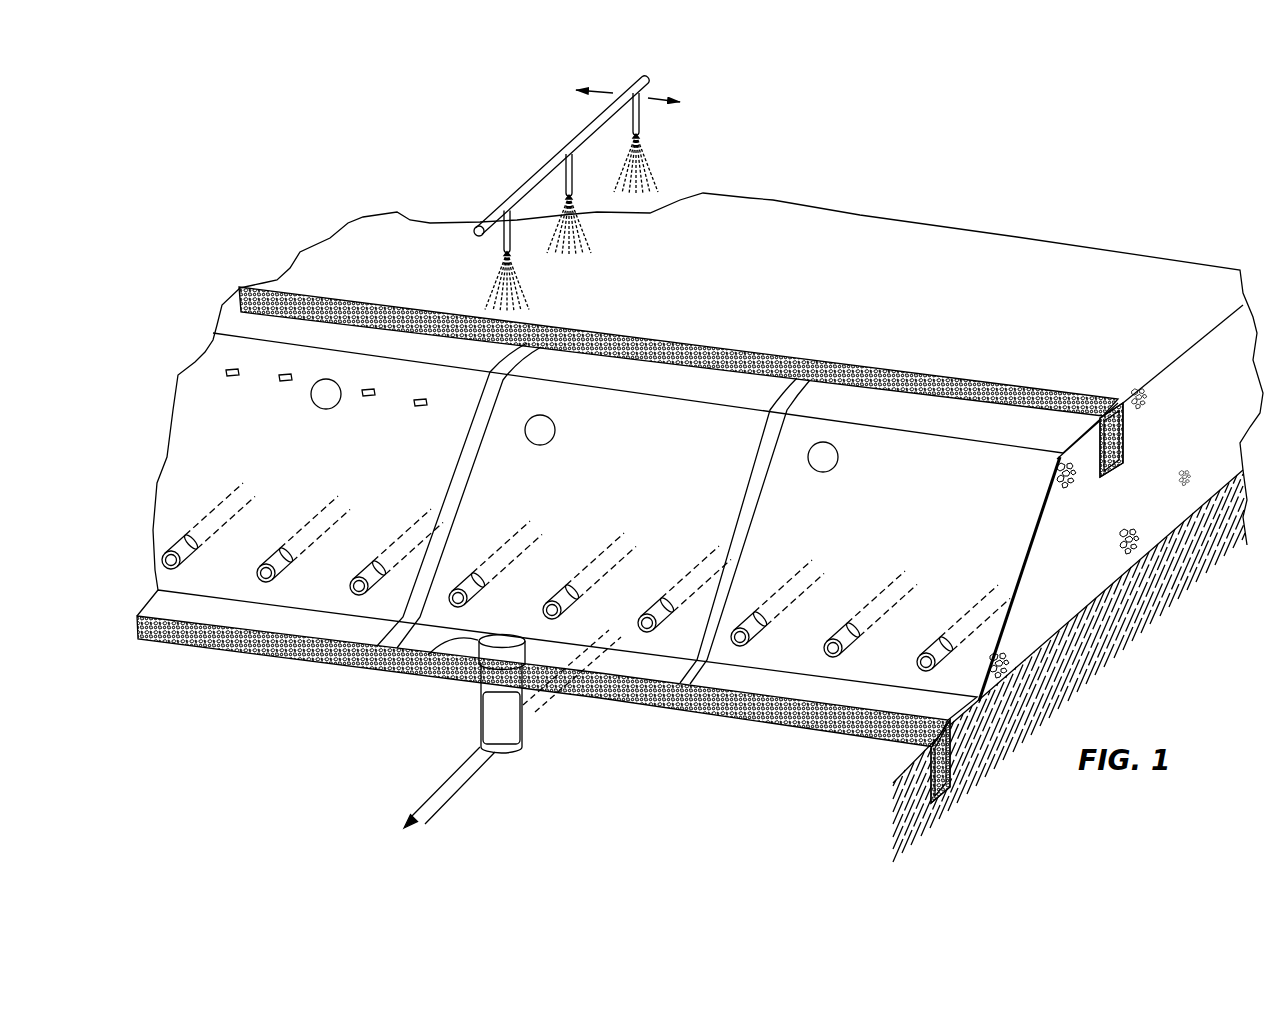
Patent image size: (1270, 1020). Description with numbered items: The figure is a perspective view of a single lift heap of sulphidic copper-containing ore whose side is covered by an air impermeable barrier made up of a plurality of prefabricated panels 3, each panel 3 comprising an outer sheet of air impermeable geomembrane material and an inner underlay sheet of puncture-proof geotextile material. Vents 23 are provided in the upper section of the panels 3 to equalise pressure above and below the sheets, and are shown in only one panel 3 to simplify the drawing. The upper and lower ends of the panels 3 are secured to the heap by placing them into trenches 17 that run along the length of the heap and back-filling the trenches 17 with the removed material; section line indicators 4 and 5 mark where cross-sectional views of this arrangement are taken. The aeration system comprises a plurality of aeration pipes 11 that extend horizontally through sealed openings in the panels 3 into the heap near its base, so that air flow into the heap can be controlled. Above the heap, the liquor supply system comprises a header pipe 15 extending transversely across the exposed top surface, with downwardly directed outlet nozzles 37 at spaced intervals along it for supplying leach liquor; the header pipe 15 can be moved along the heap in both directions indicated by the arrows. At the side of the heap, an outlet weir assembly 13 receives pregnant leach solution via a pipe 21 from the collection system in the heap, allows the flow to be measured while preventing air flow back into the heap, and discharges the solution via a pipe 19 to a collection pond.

The prefabricated panel 3 is at (178, 375).
The section line 4- 4 is at (913, 477).
The section line 5- 5 is at (360, 775).
The aeration pipe 11 is at (197, 533).
The outlet weir assembly 13 is at (430, 654).
The header pipe 15 is at (543, 167).
The trench 17 is at (1125, 437).
The pipe 19 is at (460, 777).
The pipe 21 is at (537, 693).
The vent 23 is at (233, 376).
The outlet nozzle 37 is at (641, 117).